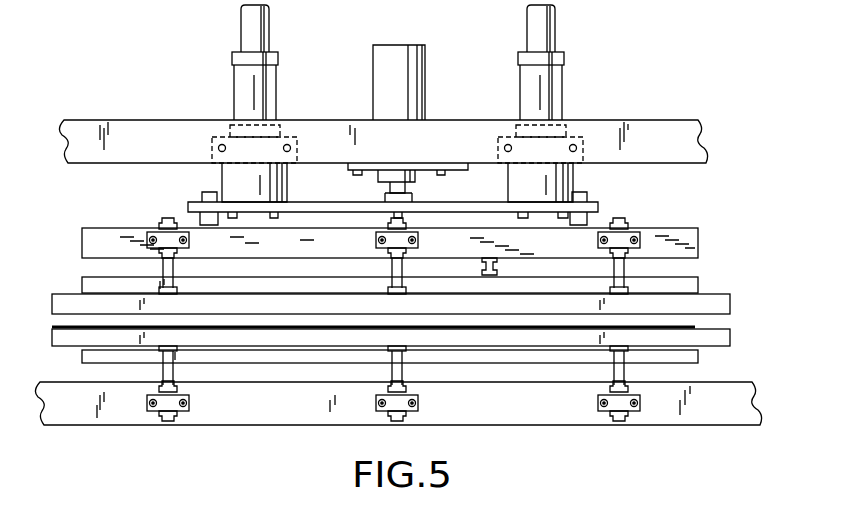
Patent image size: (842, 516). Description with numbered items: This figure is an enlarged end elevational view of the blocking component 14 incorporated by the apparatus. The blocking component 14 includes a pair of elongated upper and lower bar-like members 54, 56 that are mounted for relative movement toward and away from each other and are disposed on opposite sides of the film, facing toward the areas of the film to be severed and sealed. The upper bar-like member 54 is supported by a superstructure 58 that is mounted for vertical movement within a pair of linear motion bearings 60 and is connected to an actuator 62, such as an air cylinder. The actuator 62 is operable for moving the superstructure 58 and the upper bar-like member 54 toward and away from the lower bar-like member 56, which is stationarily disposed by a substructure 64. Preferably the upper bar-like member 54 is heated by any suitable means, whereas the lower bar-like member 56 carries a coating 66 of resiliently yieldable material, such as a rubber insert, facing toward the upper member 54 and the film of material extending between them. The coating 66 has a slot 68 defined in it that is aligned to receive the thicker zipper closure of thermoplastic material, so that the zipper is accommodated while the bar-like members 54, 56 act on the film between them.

The blocking component 14 is at (659, 82).
The upper bar-like member 54 is at (708, 290).
The lower bar-like member 56 is at (712, 340).
The superstructure 58 is at (634, 222).
The linear motion bearings 60 is at (276, 80).
The actuator 62 is at (425, 78).
The substructure 64 is at (343, 428).
The coating 66 is at (281, 330).
The slot 68 is at (375, 325).